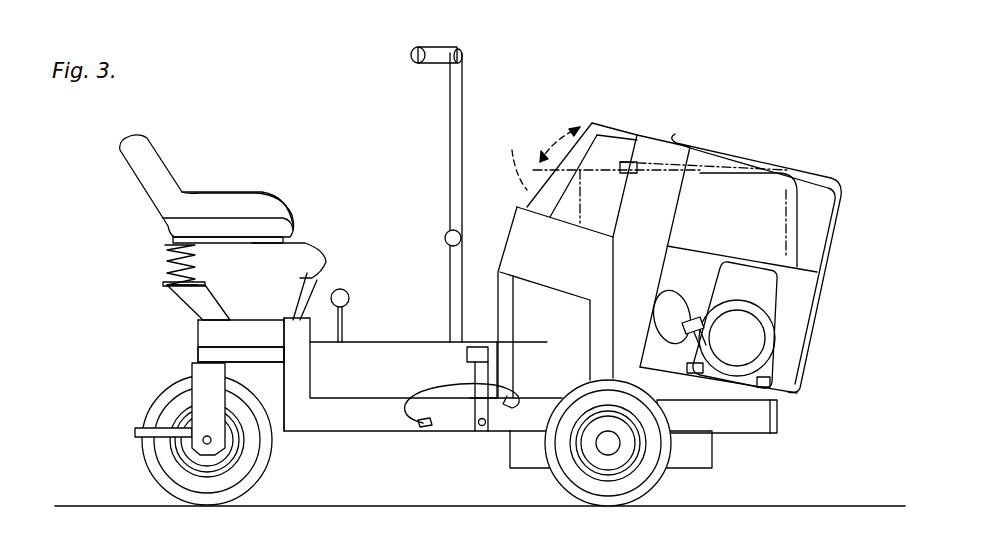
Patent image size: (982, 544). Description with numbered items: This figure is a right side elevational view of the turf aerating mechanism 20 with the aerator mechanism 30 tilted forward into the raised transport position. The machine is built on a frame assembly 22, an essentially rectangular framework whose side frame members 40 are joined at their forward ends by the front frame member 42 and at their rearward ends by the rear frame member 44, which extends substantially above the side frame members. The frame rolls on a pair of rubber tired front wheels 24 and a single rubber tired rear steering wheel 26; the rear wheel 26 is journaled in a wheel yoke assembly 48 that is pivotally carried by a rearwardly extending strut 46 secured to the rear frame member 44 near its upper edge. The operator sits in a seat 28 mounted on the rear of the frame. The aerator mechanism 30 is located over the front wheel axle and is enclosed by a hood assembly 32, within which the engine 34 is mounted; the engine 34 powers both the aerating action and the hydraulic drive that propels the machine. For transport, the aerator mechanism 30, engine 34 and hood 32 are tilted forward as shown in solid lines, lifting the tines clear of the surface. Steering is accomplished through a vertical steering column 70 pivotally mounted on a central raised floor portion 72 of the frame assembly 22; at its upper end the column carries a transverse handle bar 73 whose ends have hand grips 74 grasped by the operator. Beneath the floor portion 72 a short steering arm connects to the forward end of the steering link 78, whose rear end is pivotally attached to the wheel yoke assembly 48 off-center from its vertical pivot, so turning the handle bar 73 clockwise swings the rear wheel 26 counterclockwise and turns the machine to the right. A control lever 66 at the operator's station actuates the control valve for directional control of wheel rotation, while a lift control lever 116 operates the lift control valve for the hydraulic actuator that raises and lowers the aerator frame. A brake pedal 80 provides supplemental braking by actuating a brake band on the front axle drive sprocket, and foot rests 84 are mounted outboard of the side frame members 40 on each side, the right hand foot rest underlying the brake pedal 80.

The turf aerating mechanism 20 is at (836, 282).
The frame assembly 22 is at (388, 422).
The front wheels 24 is at (655, 490).
The rear steering wheel 26 is at (152, 398).
The seat 28 is at (226, 192).
The aerator mechanism 30 is at (522, 152).
The hood assembly 32 is at (835, 225).
The engine 34 is at (755, 352).
The side frame members 40 is at (730, 433).
The front frame member 42 is at (780, 422).
The rear frame member 44 is at (296, 376).
The strut 46 is at (246, 322).
The wheel yoke assembly 48 is at (192, 364).
The control lever 66 is at (447, 258).
The steering column 70 is at (450, 154).
The raised floor portion 72 is at (395, 344).
The handle bar 73 is at (461, 51).
The hand grips 74 is at (425, 64).
The steering link 78 is at (238, 352).
The brake pedal 80 is at (466, 356).
The foot rests 84 is at (410, 386).
The lift control lever 116 is at (352, 282).